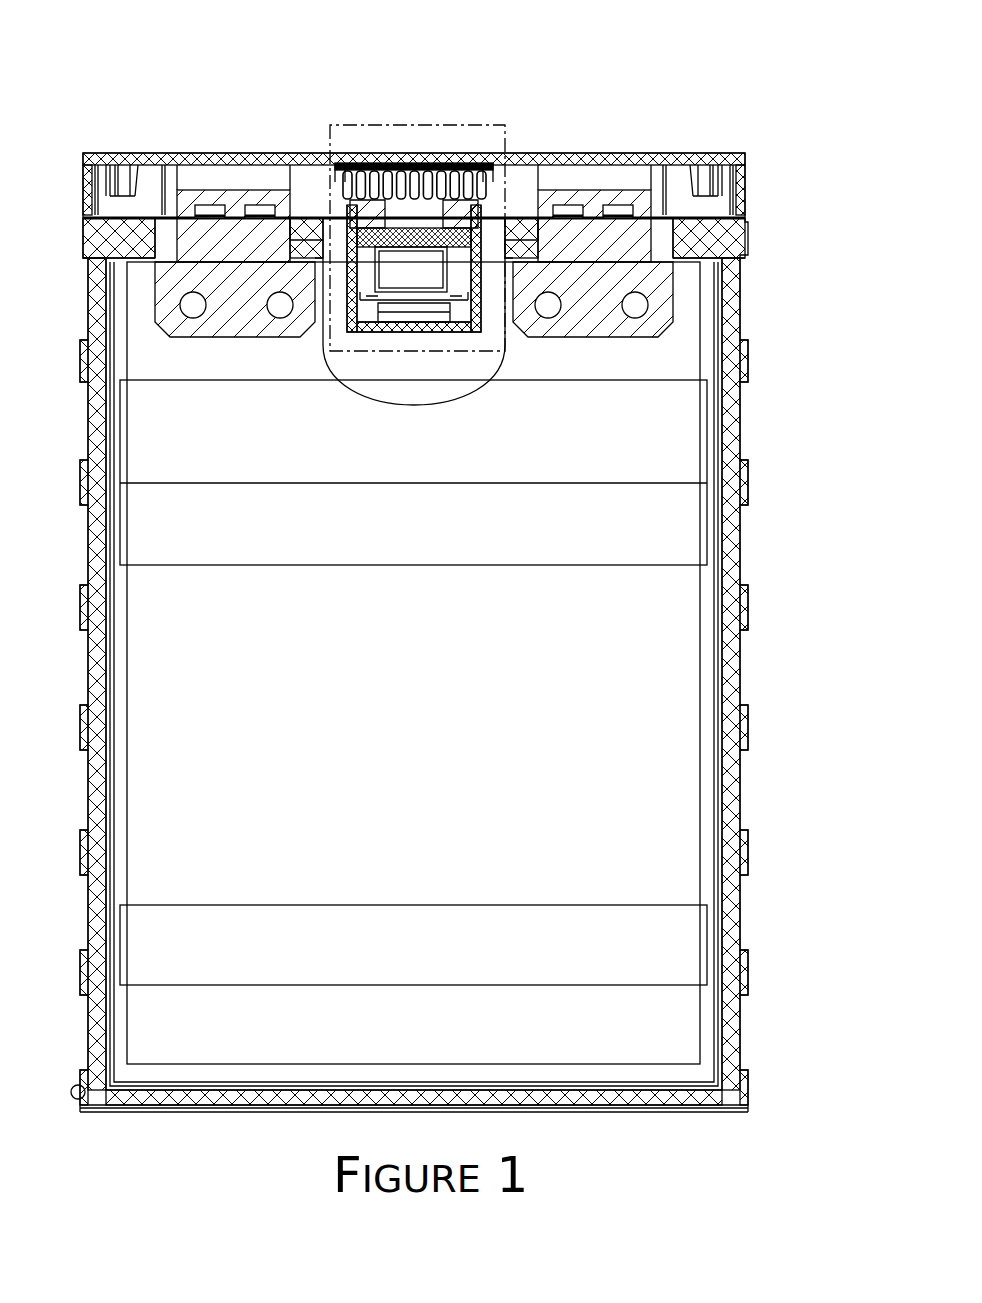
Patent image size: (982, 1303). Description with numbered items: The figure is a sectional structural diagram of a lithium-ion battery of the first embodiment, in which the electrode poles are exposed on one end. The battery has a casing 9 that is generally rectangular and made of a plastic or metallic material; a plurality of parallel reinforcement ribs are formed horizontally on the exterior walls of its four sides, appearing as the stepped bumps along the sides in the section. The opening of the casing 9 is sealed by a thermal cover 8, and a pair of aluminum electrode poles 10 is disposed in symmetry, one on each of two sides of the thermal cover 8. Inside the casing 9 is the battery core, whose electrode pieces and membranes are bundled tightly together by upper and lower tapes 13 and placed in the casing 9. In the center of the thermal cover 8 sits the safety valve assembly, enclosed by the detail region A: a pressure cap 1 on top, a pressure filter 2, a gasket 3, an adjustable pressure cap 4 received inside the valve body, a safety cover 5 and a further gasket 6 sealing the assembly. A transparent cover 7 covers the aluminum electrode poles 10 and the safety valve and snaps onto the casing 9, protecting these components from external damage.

The pressure cap 1 is at (413, 205).
The pressure filter 2 is at (396, 222).
The gasket 3 is at (374, 240).
The adjustable pressure cap 4 is at (440, 228).
The safety cover 5 is at (465, 240).
The gasket 6 is at (493, 295).
The transparent cover 7 is at (745, 173).
The thermal cover 8 is at (745, 223).
The casing 9 is at (745, 255).
The aluminum electrode poles 10 is at (672, 288).
The tapes 13 is at (708, 531).
The detail region A is at (505, 125).